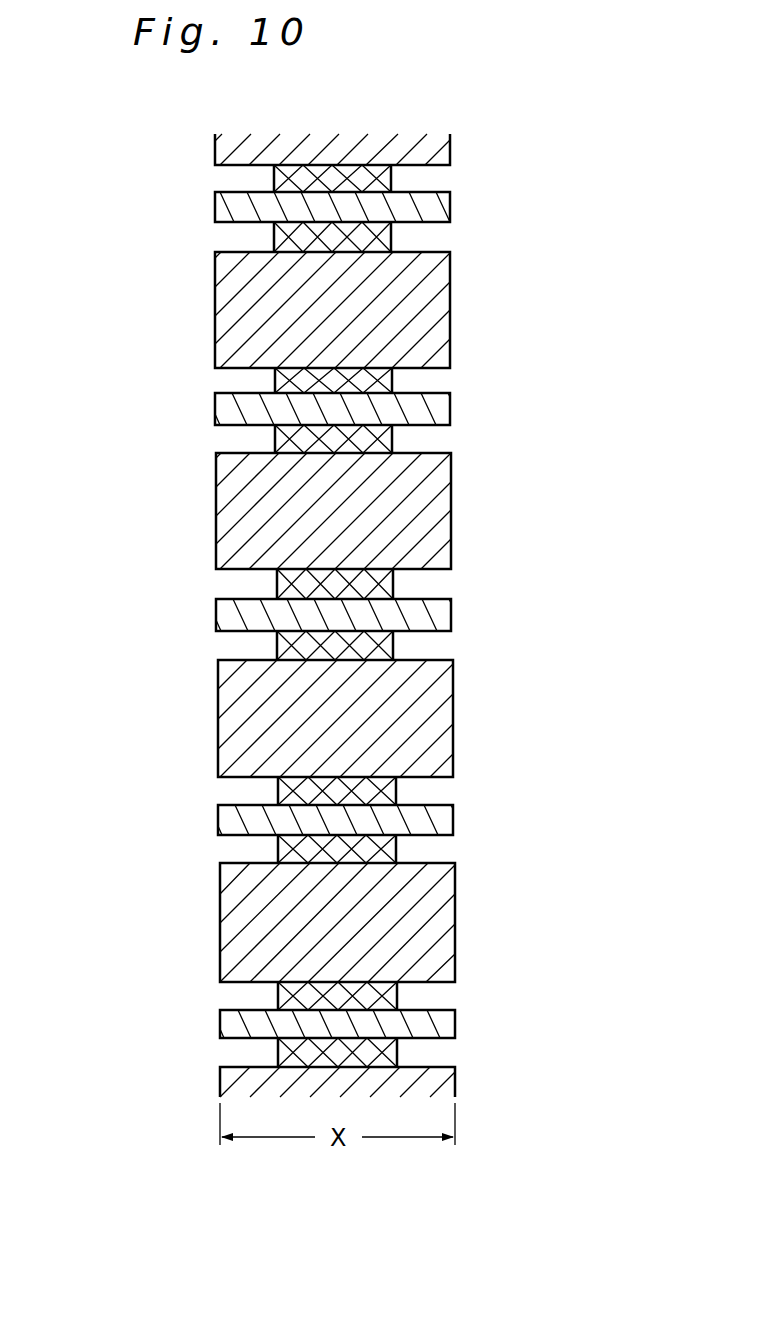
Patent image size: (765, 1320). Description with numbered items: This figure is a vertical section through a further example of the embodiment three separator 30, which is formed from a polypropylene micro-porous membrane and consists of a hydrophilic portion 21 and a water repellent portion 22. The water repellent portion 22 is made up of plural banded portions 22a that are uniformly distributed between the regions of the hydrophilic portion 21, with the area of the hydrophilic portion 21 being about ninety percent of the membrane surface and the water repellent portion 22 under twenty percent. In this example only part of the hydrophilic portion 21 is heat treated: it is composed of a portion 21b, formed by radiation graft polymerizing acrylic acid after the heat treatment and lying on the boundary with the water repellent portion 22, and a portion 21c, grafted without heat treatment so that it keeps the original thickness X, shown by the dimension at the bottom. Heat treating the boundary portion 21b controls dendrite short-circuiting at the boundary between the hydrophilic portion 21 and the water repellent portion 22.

The hydrophilic portion 21 is at (459, 489).
The heat-treated hydrophilic portion 21b is at (393, 181).
The non-heat-treated hydrophilic portion 21c is at (450, 322).
The water repellent portion 22 is at (207, 207).
The banded portion 22a is at (225, 410).
The separator 30 is at (165, 783).